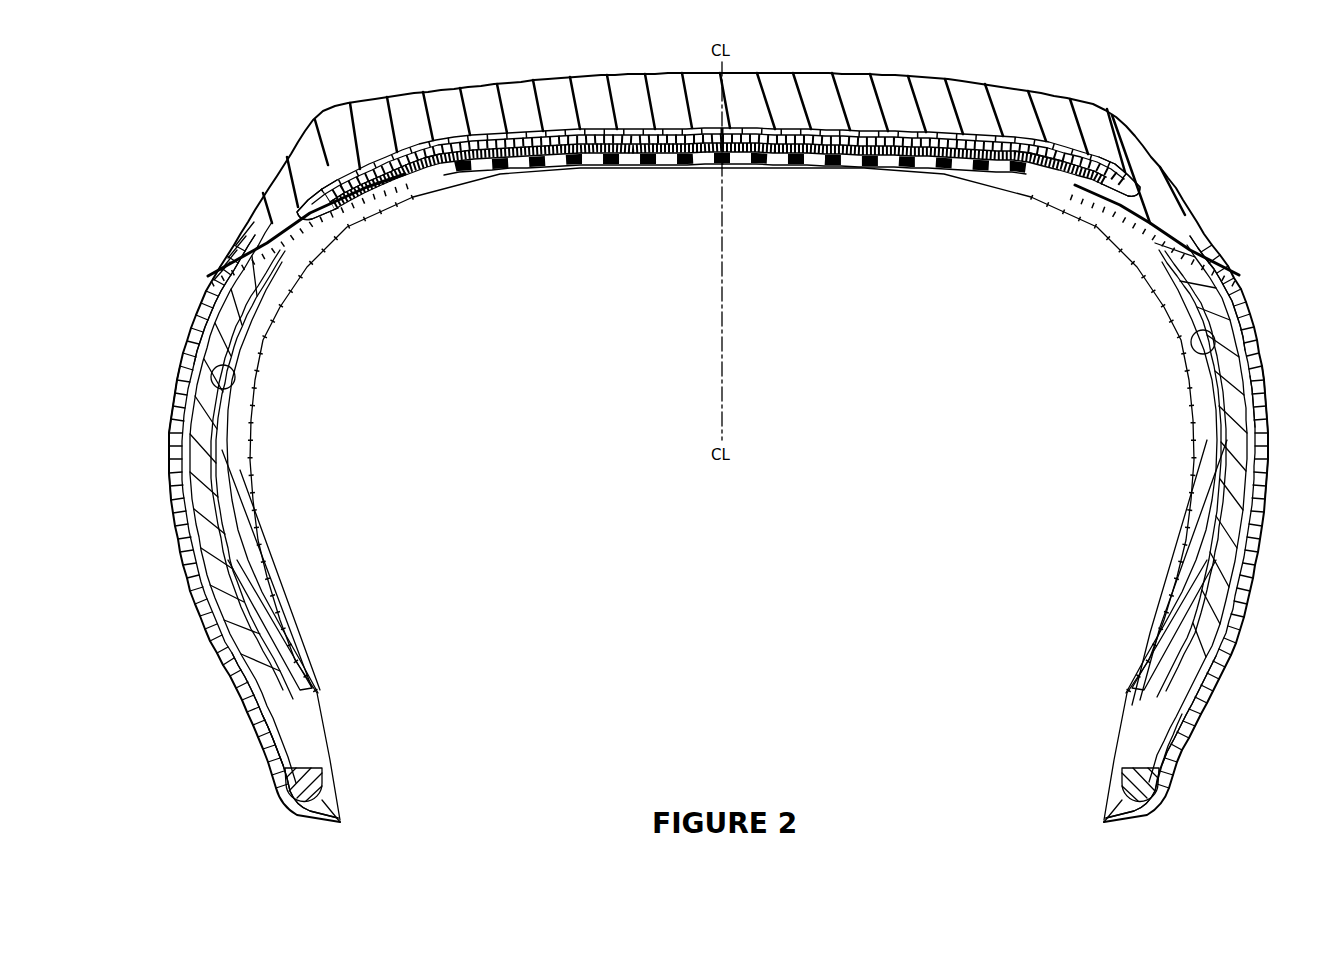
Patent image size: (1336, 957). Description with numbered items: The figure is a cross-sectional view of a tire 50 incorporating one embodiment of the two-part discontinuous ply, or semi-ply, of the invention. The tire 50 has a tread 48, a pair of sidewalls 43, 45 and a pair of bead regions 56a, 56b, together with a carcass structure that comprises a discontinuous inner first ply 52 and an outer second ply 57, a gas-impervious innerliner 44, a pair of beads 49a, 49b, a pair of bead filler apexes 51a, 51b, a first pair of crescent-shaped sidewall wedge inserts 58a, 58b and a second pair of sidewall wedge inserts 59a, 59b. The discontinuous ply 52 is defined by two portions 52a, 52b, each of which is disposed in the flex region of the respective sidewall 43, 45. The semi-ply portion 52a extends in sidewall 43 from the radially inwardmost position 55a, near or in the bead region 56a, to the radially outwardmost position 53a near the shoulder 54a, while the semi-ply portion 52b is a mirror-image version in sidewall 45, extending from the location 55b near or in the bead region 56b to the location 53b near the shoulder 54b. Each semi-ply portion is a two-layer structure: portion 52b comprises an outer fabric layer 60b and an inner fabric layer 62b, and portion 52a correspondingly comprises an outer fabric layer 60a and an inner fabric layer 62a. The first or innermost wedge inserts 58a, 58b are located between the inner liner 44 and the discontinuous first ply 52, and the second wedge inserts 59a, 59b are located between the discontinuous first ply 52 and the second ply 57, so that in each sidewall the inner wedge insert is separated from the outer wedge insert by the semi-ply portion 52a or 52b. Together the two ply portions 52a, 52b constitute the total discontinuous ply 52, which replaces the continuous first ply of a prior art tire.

The tire 50 is at (462, 55).
The tread 48 is at (777, 75).
The shoulder 54a is at (295, 186).
The shoulder 54b is at (1187, 187).
The radially outwardmost position 53a is at (348, 222).
The radially outwardmost location 53b is at (1095, 212).
The gas-impervious innerliner 44 is at (300, 270).
The outer fabric layer 60a is at (212, 338).
The outer fabric layer 60b is at (1235, 308).
The semi-ply portion 52a is at (200, 358).
The semi-ply portion 52b is at (1200, 262).
The inner fabric layer 62a is at (208, 396).
The inner fabric layer 62b is at (1215, 350).
The crescent-shaped sidewall wedge insert 58a is at (232, 422).
The crescent-shaped sidewall wedge insert 58b is at (1213, 397).
The discontinuous ply 52 is at (242, 481).
The sidewall 43 is at (178, 440).
The sidewall 45 is at (1272, 462).
The outer second ply 57 is at (1250, 418).
The sidewall wedge insert 59a is at (218, 498).
The sidewall wedge insert 59b is at (1228, 513).
The radially inwardmost position 55a is at (312, 685).
The radially inwardmost location 55b is at (1133, 706).
The bead filler apex 51a is at (280, 703).
The bead filler apex 51b is at (1183, 680).
The bead 49a is at (285, 803).
The bead 49b is at (1143, 788).
The bead region 56a is at (355, 681).
The bead region 56b is at (1089, 681).